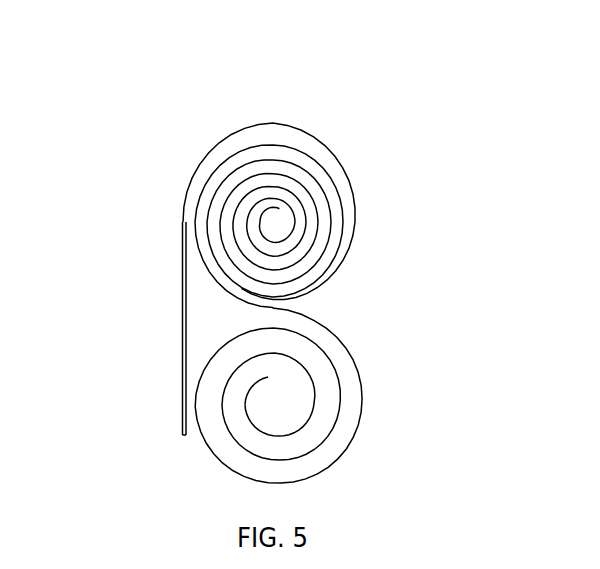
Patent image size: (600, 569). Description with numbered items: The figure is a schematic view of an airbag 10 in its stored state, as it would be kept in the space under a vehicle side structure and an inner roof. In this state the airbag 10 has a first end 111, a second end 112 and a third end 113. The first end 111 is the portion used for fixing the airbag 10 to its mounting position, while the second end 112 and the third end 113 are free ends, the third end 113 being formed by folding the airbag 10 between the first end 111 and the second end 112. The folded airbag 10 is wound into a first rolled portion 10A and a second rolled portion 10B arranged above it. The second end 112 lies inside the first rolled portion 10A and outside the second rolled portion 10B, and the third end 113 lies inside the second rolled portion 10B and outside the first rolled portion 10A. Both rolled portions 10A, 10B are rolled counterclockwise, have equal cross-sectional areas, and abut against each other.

The airbag 10 is at (466, 28).
The first rolled portion 10A is at (308, 477).
The second rolled portion 10B is at (283, 125).
The first end 111 is at (174, 412).
The second end 112 is at (366, 410).
The third end 113 is at (371, 149).